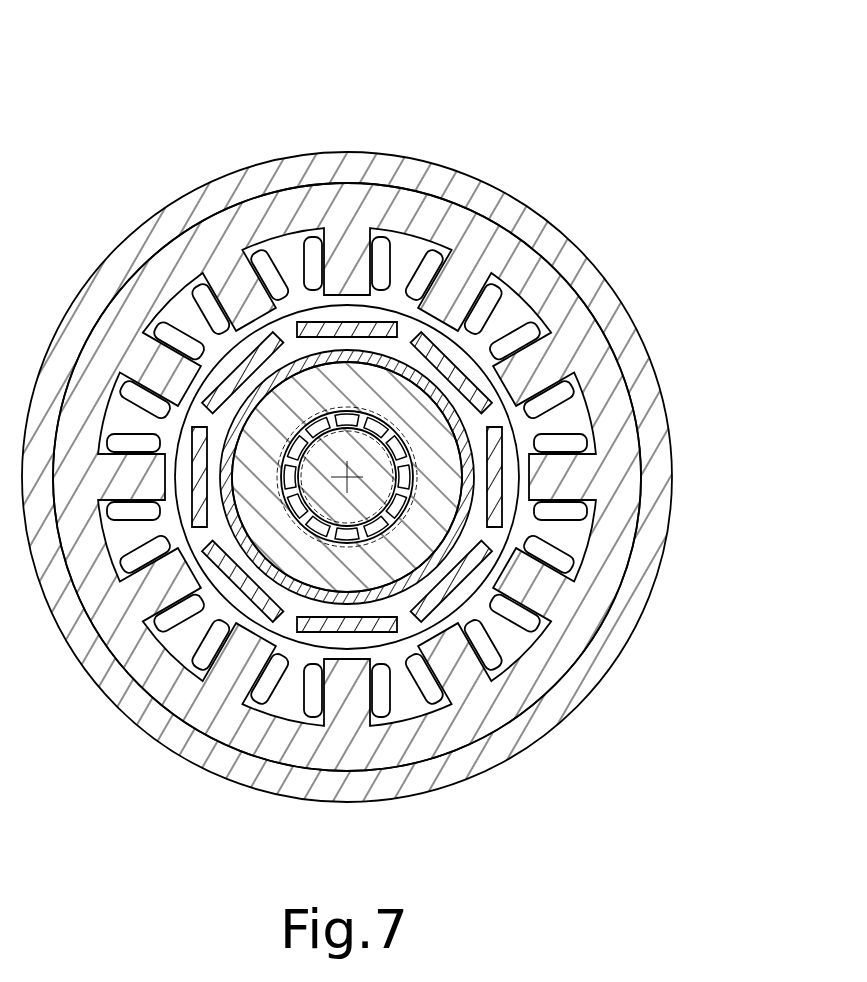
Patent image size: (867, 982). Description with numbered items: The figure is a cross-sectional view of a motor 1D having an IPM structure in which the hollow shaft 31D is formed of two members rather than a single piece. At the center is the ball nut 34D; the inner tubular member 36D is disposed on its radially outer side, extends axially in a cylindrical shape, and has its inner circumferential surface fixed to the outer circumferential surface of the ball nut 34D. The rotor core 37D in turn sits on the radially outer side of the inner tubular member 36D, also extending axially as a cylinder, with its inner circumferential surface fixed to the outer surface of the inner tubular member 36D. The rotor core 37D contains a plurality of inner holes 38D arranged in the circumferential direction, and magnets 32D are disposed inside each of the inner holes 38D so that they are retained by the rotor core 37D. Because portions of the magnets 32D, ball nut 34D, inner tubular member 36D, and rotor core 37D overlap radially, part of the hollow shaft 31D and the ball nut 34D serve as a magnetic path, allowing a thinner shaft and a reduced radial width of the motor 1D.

The motor 1D is at (235, 112).
The hollow shaft 31D is at (347, 347).
The magnets 32D is at (468, 387).
The ball nut 34D is at (275, 530).
The inner tubular member 36D is at (341, 350).
The rotor core 37D is at (399, 320).
The inner holes 38D is at (640, 523).